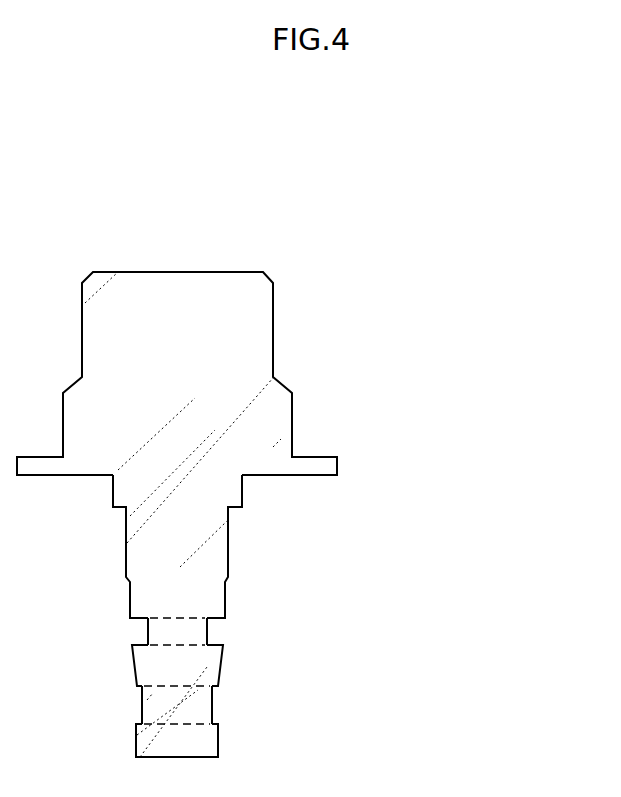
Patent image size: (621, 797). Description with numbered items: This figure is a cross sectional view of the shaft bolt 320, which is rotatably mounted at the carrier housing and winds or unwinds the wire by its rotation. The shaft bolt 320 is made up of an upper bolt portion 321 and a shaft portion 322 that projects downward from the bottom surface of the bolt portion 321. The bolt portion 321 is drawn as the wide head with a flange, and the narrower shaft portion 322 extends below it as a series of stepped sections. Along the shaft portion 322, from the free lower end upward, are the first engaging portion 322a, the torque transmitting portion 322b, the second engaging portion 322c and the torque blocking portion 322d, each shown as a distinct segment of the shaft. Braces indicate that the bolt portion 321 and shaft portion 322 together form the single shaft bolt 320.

The shaft bolt 320 is at (296, 522).
The bolt portion 321 is at (402, 272).
The shaft portion 322 is at (305, 667).
The first engaging portion 322a is at (259, 748).
The torque transmitting portion 322b is at (202, 700).
The second engaging portion 322c is at (205, 667).
The torque blocking portion 322d is at (195, 636).